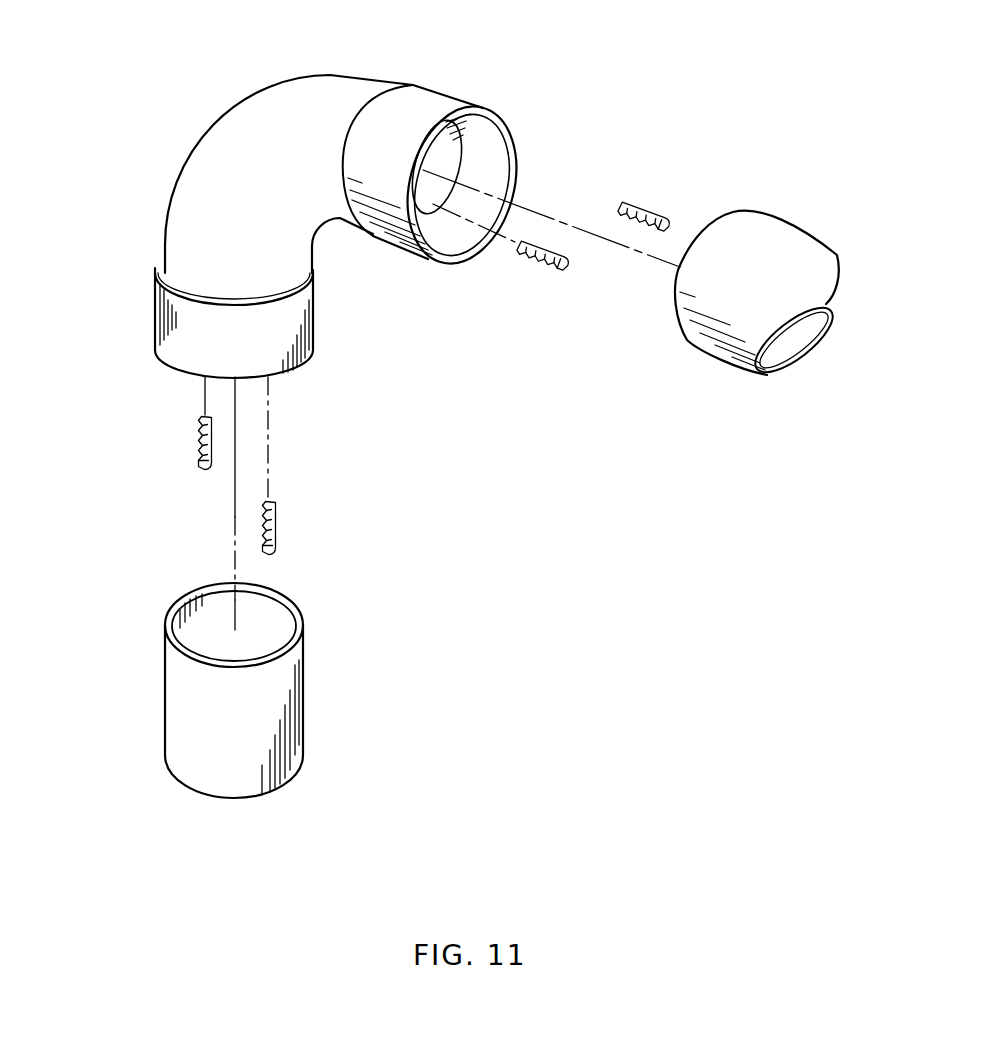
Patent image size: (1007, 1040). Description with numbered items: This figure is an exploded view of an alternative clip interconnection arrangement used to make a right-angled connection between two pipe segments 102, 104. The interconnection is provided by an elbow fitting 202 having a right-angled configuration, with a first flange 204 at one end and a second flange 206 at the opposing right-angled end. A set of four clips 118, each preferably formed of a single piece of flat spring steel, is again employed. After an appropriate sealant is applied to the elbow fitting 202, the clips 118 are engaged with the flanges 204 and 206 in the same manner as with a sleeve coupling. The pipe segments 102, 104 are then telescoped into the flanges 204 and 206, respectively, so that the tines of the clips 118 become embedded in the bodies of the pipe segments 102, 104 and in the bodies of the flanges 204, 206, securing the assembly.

The pipe segment 102 is at (146, 675).
The pipe segment 104 is at (794, 209).
The clip 118 is at (652, 196).
The elbow fitting 202 is at (168, 114).
The first flange 204 is at (146, 316).
The second flange 206 is at (464, 75).